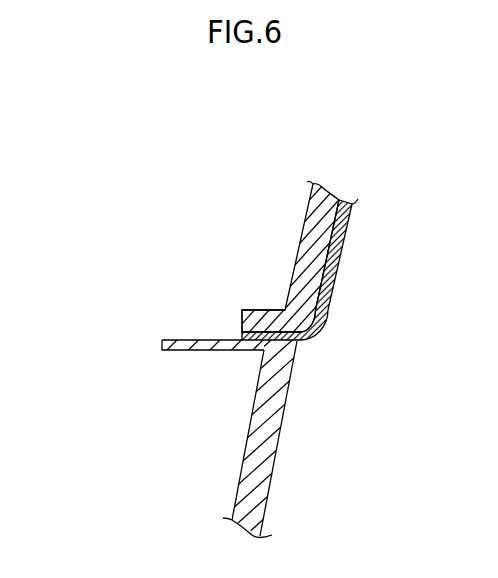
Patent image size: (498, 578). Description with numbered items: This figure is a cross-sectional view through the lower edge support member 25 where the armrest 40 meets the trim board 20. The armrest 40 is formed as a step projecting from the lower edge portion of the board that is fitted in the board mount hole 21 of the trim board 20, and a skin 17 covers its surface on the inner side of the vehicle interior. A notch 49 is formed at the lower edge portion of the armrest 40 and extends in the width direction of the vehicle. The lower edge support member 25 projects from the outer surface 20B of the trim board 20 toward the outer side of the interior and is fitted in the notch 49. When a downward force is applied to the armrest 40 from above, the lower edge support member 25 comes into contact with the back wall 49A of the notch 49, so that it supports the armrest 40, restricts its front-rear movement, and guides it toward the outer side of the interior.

The skin 17 is at (347, 225).
The armrest 40 is at (339, 255).
The board mount hole 21 is at (277, 308).
The lower edge support member 25 is at (202, 342).
The back wall 49A is at (248, 341).
The notch 49 is at (95, 435).
The trim board 20 is at (254, 432).
The outer surface 20B is at (236, 465).